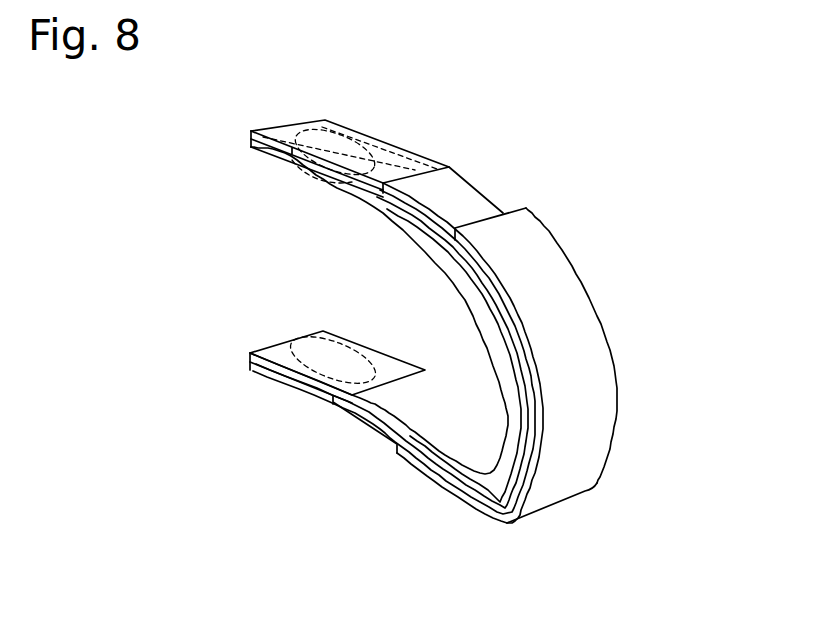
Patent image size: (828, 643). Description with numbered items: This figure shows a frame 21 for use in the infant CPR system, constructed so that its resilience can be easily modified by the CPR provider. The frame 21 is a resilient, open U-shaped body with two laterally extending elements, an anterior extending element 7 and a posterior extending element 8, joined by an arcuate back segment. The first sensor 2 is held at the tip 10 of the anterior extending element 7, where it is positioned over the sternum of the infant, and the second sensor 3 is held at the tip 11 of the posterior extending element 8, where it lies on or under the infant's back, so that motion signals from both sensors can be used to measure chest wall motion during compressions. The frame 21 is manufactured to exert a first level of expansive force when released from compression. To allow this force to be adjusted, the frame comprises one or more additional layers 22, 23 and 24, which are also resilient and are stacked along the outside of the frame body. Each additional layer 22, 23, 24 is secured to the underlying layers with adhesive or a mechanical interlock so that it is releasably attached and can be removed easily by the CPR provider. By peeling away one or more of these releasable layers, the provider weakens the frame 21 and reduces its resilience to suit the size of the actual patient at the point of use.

The frame 21 is at (630, 262).
The additional layer 22 is at (342, 124).
The anterior extending element 7 is at (389, 141).
The first sensor 2 is at (276, 160).
The tip 10 is at (251, 147).
The additional layer 23 is at (468, 176).
The additional layer 24 is at (549, 236).
The second sensor 3 is at (338, 370).
The tip 11 is at (250, 368).
The posterior extending element 8 is at (331, 410).